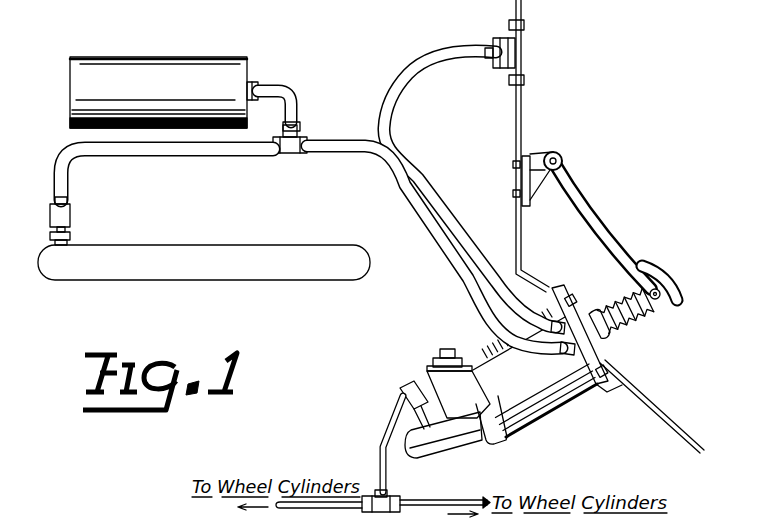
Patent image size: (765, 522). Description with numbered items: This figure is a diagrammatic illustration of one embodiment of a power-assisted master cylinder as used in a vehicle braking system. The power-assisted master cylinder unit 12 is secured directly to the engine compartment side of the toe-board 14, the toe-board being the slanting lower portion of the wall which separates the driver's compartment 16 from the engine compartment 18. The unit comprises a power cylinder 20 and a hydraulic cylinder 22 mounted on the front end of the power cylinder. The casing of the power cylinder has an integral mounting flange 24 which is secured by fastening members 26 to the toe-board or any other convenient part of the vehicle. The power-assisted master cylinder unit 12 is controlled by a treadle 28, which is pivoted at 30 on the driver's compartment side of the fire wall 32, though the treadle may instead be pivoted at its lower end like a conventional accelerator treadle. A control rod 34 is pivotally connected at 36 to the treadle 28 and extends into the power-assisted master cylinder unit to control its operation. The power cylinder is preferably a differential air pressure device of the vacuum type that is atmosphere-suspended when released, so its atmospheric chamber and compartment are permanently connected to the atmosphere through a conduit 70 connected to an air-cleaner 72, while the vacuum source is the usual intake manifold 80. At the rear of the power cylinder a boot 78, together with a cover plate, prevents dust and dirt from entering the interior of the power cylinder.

The power-assisted master cylinder unit 12 is at (551, 422).
The toe-board 14 is at (662, 410).
The driver's compartment 16 is at (577, 121).
The engine compartment 18 is at (486, 129).
The power cylinder 20 is at (493, 357).
The hydraulic cylinder 22 is at (444, 445).
The mounting flange 24 is at (597, 392).
The fastening members 26 is at (575, 288).
The treadle 28 is at (597, 229).
The pivot 30 is at (563, 158).
The fire wall 32 is at (522, 99).
The control rod 34 is at (651, 305).
The pivotal connection 36 is at (672, 300).
The conduit 70 is at (433, 238).
The air-cleaner 72 is at (510, 42).
The boot 78 is at (649, 299).
The intake manifold 80 is at (222, 267).